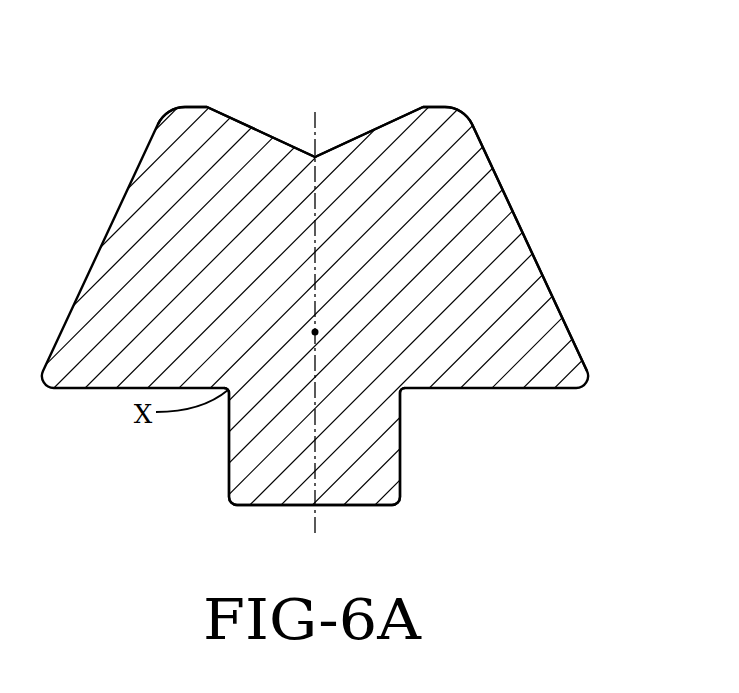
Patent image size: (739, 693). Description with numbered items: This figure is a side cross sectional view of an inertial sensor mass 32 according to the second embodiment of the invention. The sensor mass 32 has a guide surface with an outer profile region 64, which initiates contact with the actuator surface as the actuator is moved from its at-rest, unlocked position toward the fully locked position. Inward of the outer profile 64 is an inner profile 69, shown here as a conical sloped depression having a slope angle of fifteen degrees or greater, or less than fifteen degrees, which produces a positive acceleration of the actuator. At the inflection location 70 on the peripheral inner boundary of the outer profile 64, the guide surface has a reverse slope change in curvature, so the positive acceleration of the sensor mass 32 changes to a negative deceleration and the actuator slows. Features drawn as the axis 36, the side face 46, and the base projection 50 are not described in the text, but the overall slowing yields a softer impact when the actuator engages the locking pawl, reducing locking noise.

The inertial sensor mass 32 is at (510, 205).
The central axis 36 is at (315, 108).
The side face 46 is at (553, 297).
The base projection 50 is at (400, 458).
The outer profile region 64 is at (161, 123).
The inner profile 69 is at (258, 130).
The inflection location 70 is at (192, 107).